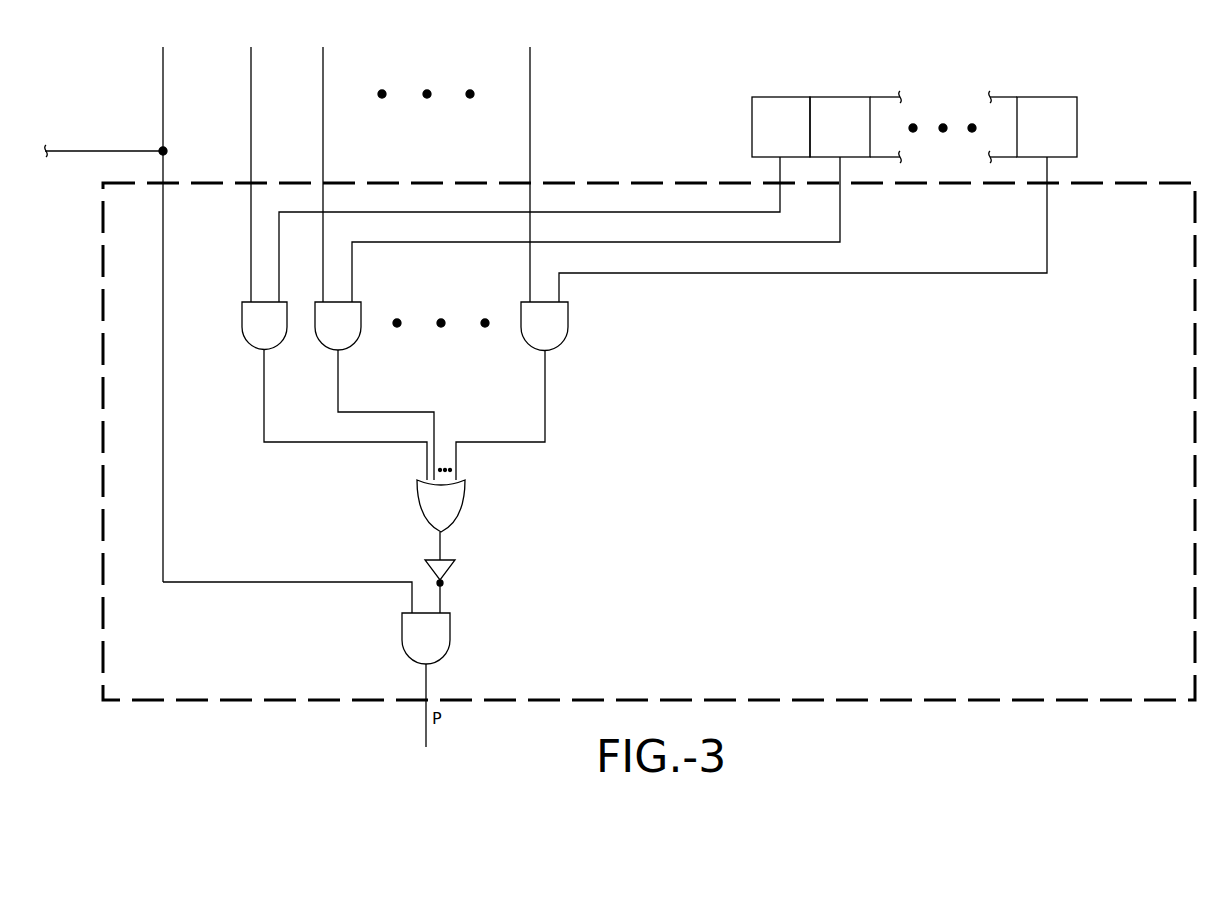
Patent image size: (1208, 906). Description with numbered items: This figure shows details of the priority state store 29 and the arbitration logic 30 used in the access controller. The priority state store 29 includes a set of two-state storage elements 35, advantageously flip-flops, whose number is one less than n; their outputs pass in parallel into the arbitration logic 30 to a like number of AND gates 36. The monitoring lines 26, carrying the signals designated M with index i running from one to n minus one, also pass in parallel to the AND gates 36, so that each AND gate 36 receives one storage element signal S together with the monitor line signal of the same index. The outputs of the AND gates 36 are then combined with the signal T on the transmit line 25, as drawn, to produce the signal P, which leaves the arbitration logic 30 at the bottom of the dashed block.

The token input line T 25 is at (163, 76).
The mask input lines M1..Mn-1 26 is at (530, 66).
The status register row 29 is at (969, 107).
The arbitration logic 30 is at (1093, 185).
The status register cells S1..Sn-1 35 is at (767, 101).
The AND gate array 36 is at (615, 318).